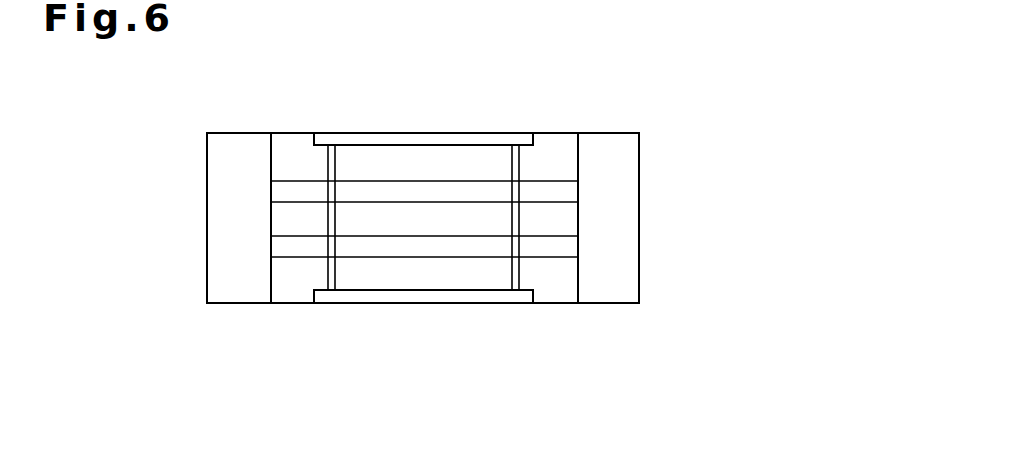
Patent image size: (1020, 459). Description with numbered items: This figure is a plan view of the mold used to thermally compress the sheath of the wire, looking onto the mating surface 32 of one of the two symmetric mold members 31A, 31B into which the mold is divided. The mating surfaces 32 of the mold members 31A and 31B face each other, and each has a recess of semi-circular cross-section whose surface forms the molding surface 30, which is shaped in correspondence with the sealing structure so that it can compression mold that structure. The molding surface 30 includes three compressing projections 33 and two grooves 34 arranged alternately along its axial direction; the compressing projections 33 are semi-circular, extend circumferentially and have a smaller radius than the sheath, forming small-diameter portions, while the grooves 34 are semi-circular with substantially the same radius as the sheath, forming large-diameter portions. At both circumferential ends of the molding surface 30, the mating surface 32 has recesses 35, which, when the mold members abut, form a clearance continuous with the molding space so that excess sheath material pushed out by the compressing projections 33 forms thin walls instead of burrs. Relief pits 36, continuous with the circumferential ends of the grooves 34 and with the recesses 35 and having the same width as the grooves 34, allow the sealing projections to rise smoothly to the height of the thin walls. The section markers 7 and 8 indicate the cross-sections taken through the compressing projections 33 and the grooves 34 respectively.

The section line VII-VII 7 is at (202, 217).
The section line VIII-VIII 8 is at (170, 245).
The molding surface 30 is at (374, 155).
The mold member 31A is at (207, 145).
The mold member 31B is at (218, 195).
The mating surface 32 is at (620, 142).
The compressing projection 33 is at (412, 217).
The groove 34 is at (482, 190).
The recess 35 is at (297, 217).
The relief pit 36 is at (280, 188).